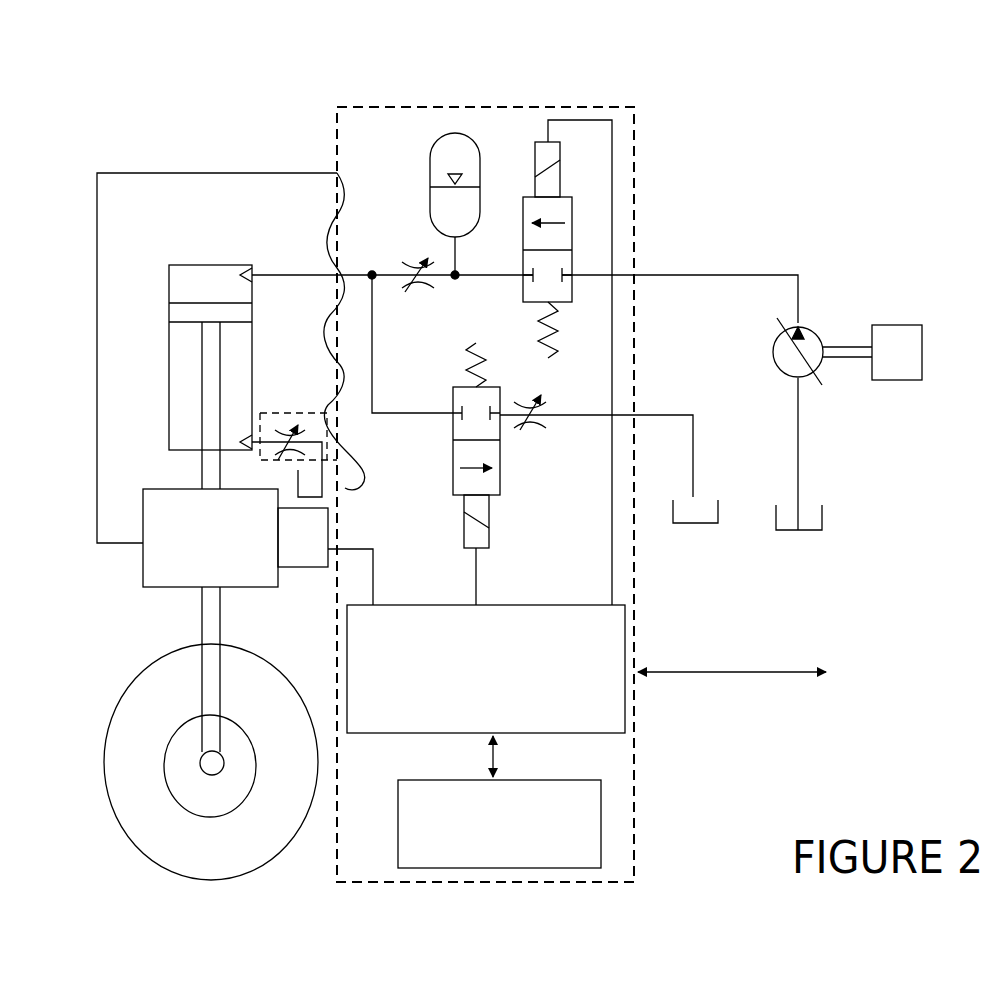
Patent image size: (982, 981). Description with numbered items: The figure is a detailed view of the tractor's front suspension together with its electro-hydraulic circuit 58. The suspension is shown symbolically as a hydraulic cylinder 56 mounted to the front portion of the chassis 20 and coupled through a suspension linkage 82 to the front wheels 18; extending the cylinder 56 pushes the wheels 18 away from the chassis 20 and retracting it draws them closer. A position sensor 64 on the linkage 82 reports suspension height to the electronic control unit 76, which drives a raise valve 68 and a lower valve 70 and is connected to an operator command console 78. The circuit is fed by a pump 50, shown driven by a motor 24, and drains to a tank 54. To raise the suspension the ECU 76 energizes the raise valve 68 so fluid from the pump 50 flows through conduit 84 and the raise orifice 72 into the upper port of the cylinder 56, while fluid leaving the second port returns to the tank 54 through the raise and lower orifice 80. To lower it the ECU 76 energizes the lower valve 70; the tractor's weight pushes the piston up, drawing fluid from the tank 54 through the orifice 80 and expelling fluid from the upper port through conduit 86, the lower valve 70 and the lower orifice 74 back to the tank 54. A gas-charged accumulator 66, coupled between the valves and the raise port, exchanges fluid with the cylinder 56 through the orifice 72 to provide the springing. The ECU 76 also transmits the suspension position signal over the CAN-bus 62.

The front wheels 18 is at (272, 776).
The chassis 20 is at (195, 233).
The motor 24 is at (893, 325).
The pump 50 is at (777, 335).
The tank 54 is at (313, 538).
The hydraulic cylinder 56 is at (252, 392).
The electro-hydraulic circuit 58 is at (560, 323).
The CAN-bus 62 is at (732, 658).
The position sensor 64 is at (290, 556).
The accumulator 66 is at (447, 133).
The raise valve 68 is at (535, 172).
The lower valve 70 is at (452, 487).
The raise orifice 72 is at (418, 267).
The lower orifice 74 is at (540, 396).
The electronic control unit 76 is at (486, 669).
The operator command console 78 is at (499, 802).
The raise and lower orifice 80 is at (293, 427).
The suspension linkage 82 is at (197, 559).
The conduit 84 is at (493, 278).
The conduit 86 is at (392, 413).